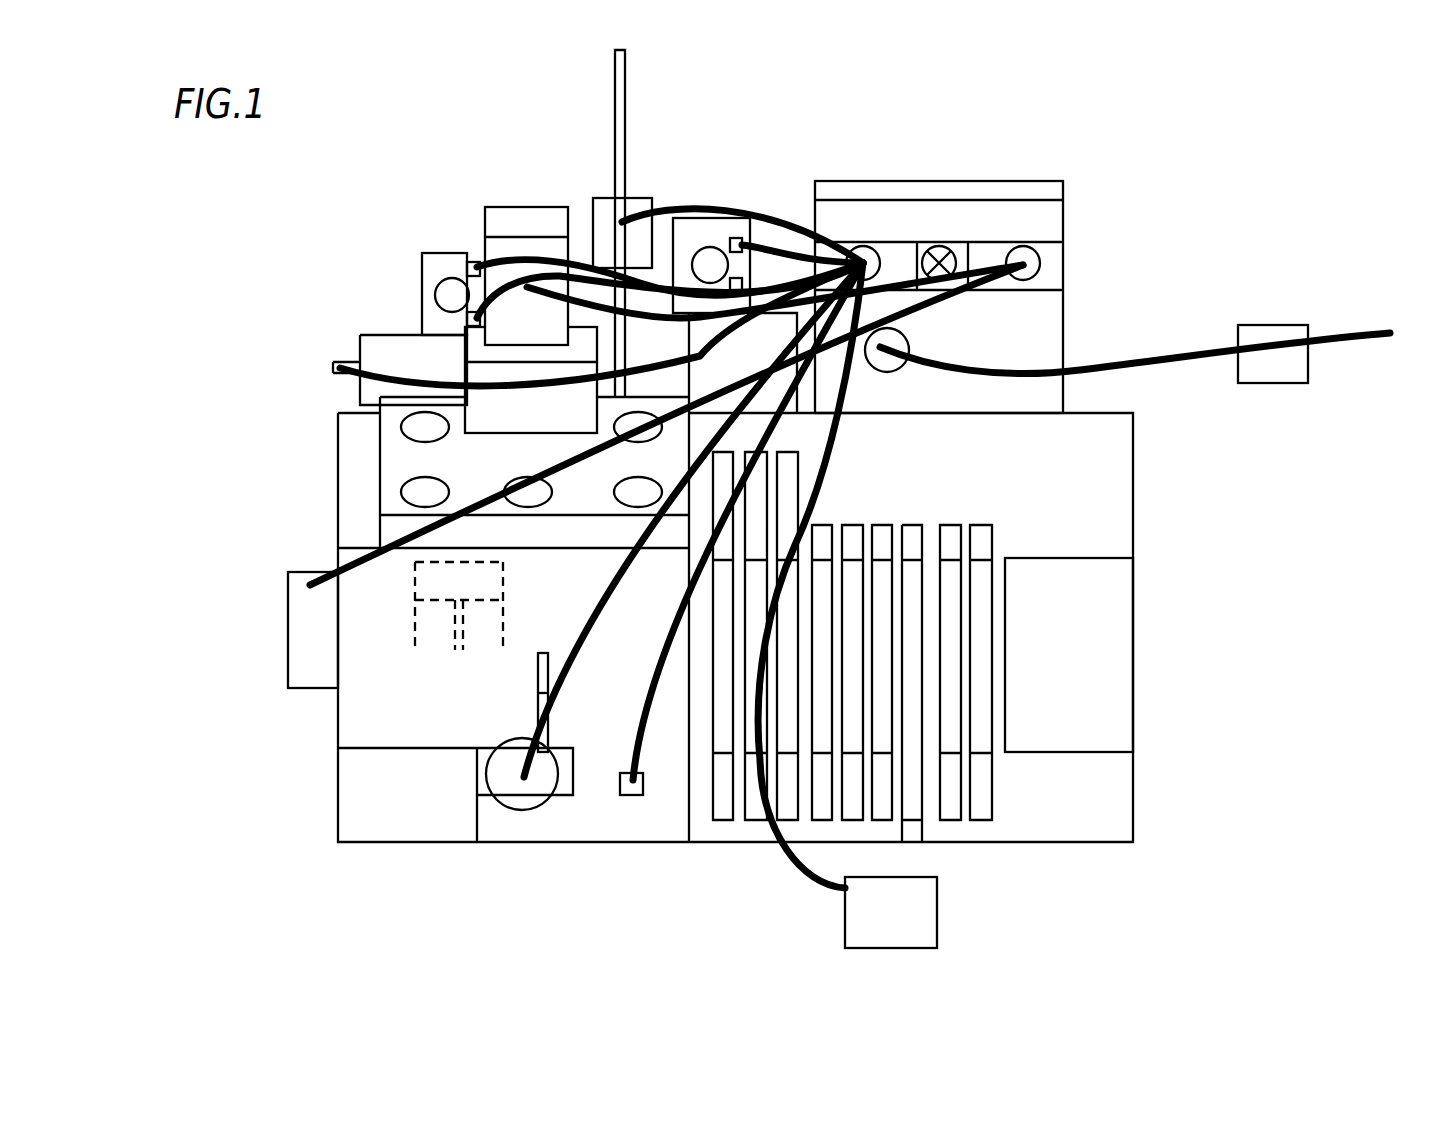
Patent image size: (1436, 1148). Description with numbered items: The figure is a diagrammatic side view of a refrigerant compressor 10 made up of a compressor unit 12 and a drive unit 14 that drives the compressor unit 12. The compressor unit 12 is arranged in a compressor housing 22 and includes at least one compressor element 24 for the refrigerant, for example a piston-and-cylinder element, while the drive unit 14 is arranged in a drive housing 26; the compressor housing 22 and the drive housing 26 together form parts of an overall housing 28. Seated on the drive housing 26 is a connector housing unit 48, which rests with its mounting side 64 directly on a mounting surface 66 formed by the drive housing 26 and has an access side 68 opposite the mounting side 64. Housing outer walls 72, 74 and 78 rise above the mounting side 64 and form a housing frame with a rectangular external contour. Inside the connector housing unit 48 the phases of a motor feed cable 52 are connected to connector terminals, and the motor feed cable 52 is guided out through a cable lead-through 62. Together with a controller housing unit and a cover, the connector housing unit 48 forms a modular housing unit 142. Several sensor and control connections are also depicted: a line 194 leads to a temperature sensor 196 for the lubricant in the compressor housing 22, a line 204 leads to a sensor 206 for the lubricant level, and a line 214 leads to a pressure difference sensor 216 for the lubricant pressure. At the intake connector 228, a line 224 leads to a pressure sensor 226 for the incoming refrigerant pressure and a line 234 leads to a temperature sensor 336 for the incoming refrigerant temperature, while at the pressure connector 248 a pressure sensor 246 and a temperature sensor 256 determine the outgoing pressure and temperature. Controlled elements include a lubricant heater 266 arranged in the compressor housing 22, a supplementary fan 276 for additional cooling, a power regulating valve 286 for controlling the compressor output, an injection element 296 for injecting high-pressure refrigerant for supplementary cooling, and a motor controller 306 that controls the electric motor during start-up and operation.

The refrigerant compressor 10 is at (947, 157).
The compressor unit 12 is at (412, 661).
The drive unit 14 is at (950, 508).
The compressor housing 22 is at (460, 715).
The compressor element 24 is at (425, 627).
The drive housing 26 is at (1014, 542).
The overall housing 28 is at (672, 745).
The connector housing unit 48 is at (1047, 322).
The motor feed cable 52 is at (1197, 352).
The cable lead-through 62 is at (887, 372).
The mounting side 64 is at (1050, 418).
The mounting surface 66 is at (1043, 373).
The access side 68 is at (1056, 285).
The housing outer wall 72 is at (987, 245).
The housing outer wall 74 is at (898, 255).
The housing outer wall 78 is at (850, 197).
The housing unit 142 is at (1092, 263).
The line 194 is at (640, 742).
The temperature sensor 196 is at (630, 795).
The line 204 is at (590, 633).
The sensor 206 is at (543, 780).
The line 214 is at (395, 528).
The pressure difference sensor 216 is at (292, 604).
The line 224 is at (778, 250).
The pressure sensor 226 is at (726, 237).
The intake connector 228 is at (687, 235).
The line 234 is at (758, 268).
The pressure sensor 246 is at (467, 264).
The pressure connector 248 is at (437, 272).
The temperature sensor 256 is at (440, 325).
The lubricant heater 266 is at (538, 660).
The supplementary fan 276 is at (924, 910).
The power regulating valve 286 is at (507, 247).
The injection element 296 is at (600, 222).
The motor controller 306 is at (1275, 342).
The temperature sensor 336 is at (707, 265).